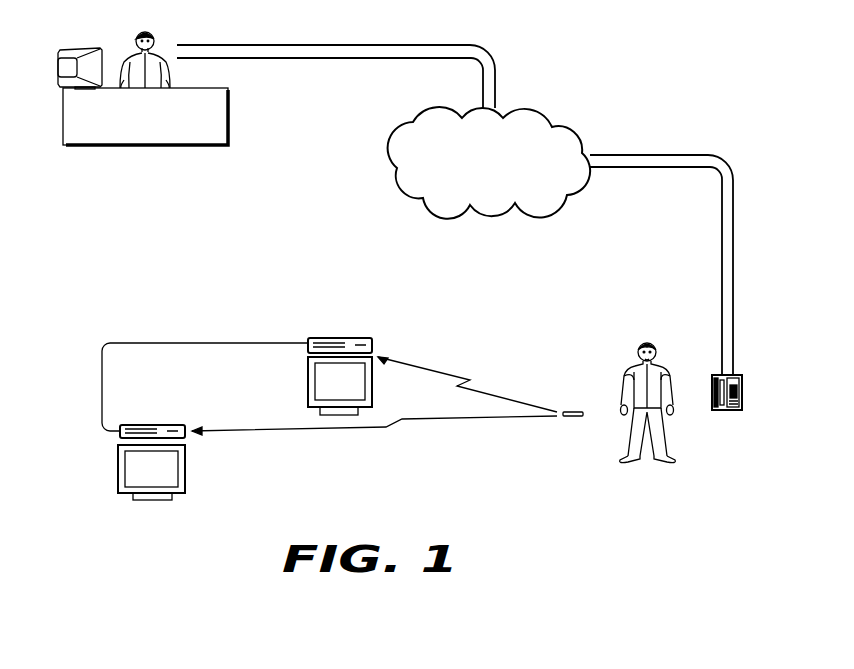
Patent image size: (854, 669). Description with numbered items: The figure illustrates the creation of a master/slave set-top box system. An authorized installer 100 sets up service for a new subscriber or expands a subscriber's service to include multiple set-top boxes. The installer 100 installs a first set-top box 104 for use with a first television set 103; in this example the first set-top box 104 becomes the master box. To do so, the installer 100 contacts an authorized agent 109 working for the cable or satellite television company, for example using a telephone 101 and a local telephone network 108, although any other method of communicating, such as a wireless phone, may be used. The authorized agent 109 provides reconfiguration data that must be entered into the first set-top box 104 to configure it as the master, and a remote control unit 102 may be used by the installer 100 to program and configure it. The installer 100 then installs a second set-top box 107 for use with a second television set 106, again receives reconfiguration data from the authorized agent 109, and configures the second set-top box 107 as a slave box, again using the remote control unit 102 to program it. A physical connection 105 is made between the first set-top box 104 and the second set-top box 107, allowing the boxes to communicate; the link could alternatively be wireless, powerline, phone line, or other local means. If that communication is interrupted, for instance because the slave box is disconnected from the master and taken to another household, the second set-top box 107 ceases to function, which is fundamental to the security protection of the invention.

The authorized installer 100 is at (648, 340).
The telephone 101 is at (728, 411).
The remote control unit 102 is at (573, 417).
The first television set 103 is at (307, 383).
The first set-top box 104 is at (343, 337).
The physical connection 105 is at (216, 342).
The second television set 106 is at (117, 467).
The second set-top box 107 is at (155, 424).
The local telephone network 108 is at (488, 217).
The authorized agent 109 is at (132, 35).